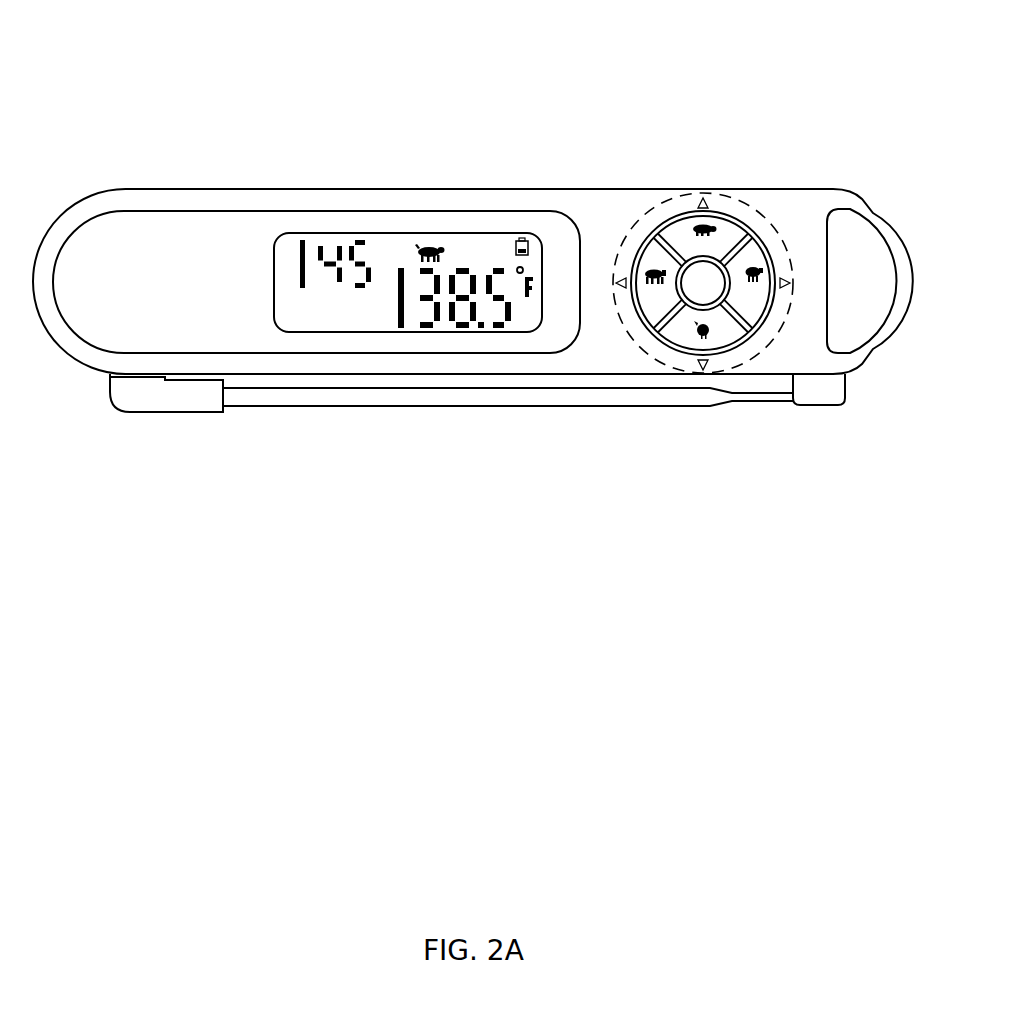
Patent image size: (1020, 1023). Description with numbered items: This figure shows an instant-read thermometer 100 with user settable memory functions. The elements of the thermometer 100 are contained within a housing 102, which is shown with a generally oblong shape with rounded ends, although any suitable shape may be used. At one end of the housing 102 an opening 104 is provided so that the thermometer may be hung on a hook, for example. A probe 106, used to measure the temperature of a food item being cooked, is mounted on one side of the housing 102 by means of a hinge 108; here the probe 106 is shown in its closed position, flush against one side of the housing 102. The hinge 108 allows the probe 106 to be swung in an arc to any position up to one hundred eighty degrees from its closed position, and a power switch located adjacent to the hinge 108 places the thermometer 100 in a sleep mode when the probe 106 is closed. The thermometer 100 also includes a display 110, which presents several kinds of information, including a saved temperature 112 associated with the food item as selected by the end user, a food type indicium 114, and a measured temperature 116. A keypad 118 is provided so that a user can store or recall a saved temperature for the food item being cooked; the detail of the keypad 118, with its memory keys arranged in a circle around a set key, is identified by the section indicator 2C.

The instant-read thermometer 100 is at (407, 90).
The housing 102 is at (150, 189).
The opening 104 is at (852, 255).
The probe 106 is at (357, 406).
The hinge 108 is at (135, 412).
The display 110 is at (400, 238).
The saved temperature 112 is at (352, 240).
The food type indicium 114 is at (438, 240).
The measured temperature 116 is at (485, 262).
The keypad 118 is at (728, 230).
The section line for FIG. 2C is at (740, 365).